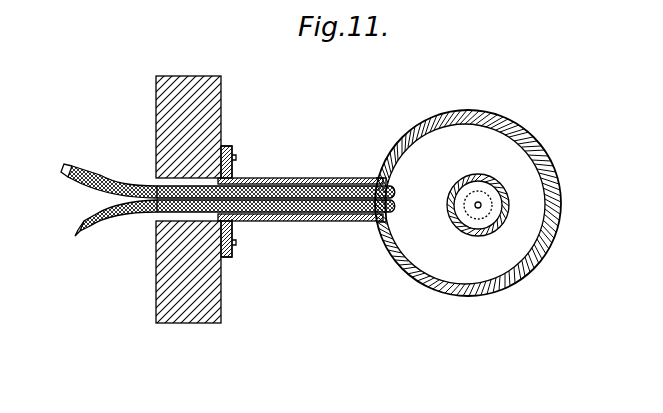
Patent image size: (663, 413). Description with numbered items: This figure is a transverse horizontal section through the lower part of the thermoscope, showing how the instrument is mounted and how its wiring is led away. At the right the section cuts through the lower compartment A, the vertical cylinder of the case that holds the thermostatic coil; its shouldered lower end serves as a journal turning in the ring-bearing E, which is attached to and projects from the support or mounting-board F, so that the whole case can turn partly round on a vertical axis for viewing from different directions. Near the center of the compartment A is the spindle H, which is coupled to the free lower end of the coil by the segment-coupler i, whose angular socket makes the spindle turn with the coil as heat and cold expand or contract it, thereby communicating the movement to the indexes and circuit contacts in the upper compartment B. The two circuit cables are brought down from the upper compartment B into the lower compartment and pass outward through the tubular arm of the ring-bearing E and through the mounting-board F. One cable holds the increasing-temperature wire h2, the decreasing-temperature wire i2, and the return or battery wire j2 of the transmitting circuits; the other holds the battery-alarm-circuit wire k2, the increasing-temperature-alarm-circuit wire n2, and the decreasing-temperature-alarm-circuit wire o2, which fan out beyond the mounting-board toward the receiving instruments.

The mounting-board F is at (198, 199).
The upper compartment B is at (300, 186).
The ring-bearing E is at (477, 203).
The lower compartment A is at (494, 205).
The spindle H is at (478, 206).
The segment-coupler i is at (470, 214).
The return or battery wire j2 is at (64, 168).
The increasing-temperature wire h2 is at (72, 168).
The decreasing-temperature wire i2 is at (72, 176).
The increasing-temperature-alarm-circuit wire n2 is at (80, 228).
The battery-alarm-circuit wire k2 is at (80, 233).
The decreasing-temperature-alarm-circuit wire o2 is at (90, 226).